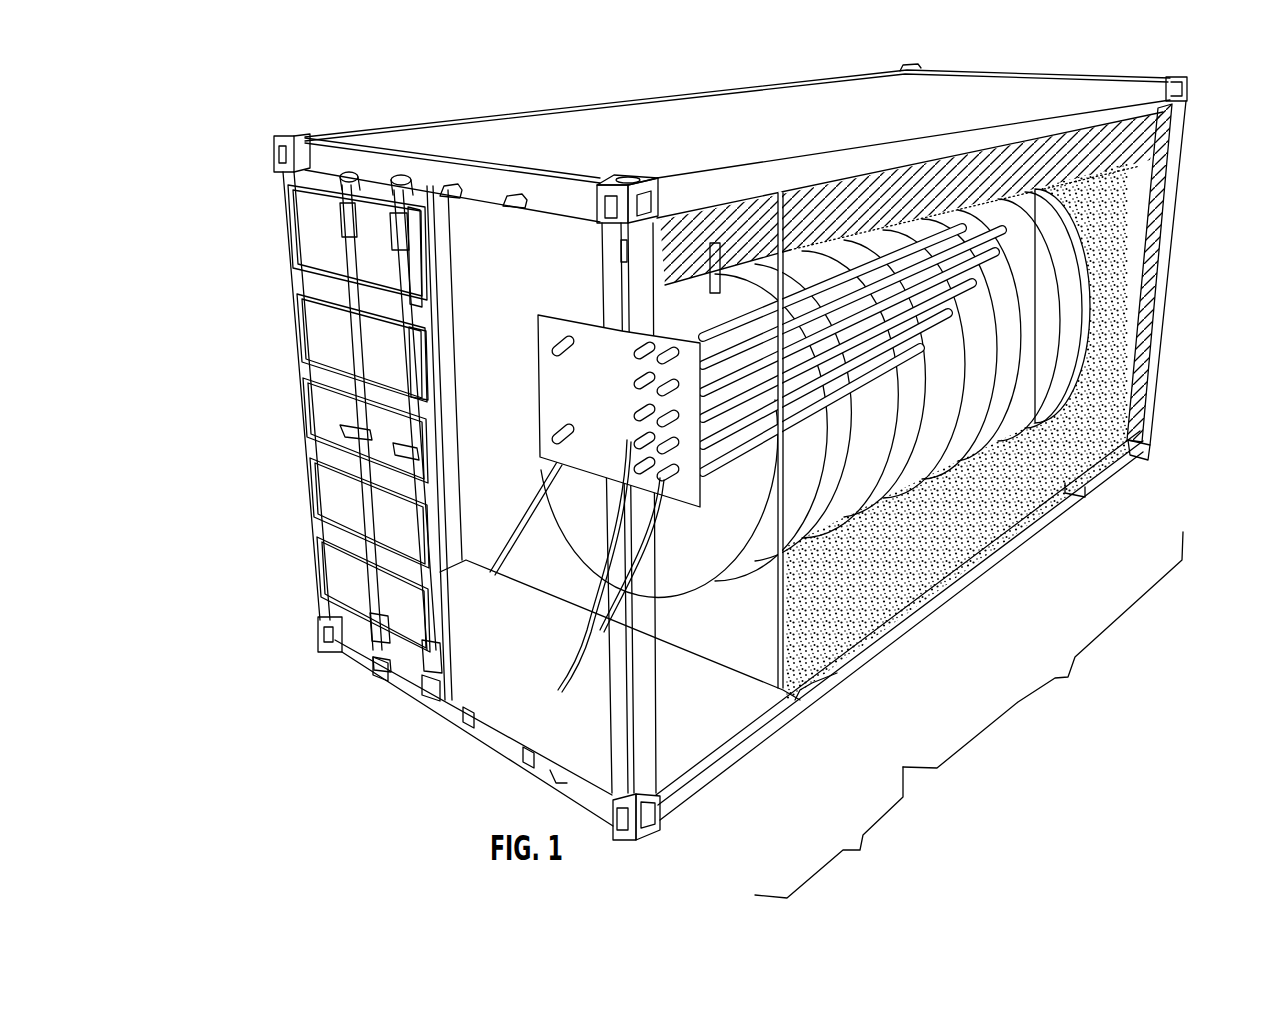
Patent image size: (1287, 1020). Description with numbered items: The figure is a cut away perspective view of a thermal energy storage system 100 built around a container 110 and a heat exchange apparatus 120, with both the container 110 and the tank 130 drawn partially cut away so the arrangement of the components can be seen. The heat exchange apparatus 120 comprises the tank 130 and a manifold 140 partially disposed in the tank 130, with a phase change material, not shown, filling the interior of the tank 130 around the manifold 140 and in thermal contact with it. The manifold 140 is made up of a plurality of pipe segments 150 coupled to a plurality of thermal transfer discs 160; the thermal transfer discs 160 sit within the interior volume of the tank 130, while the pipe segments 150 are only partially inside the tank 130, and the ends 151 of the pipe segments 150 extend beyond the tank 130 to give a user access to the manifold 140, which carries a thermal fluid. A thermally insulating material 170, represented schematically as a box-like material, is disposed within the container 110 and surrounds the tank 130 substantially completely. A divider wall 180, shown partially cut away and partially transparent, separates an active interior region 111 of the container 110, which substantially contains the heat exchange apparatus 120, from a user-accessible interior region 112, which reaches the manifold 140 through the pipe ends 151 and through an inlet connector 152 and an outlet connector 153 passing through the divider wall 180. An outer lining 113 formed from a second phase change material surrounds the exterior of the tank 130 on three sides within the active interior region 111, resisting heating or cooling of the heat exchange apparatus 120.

The thermal energy storage system 100 is at (250, 129).
The container 110 is at (342, 597).
The active interior region 111 is at (1043, 650).
The user-accessible interior region 112 is at (829, 832).
The outer lining 113 is at (1150, 307).
The heat exchange apparatus 120 is at (1073, 390).
The tank 130 is at (733, 527).
The manifold 140 is at (710, 640).
The pipe segments 150 is at (867, 303).
The ends of the pipe segments 151 is at (578, 574).
The inlet connector 152 is at (548, 347).
The outlet connector 153 is at (548, 433).
The thermal transfer discs 160 is at (920, 418).
The thermally insulating material 170 is at (1067, 453).
The divider wall 180 is at (667, 493).